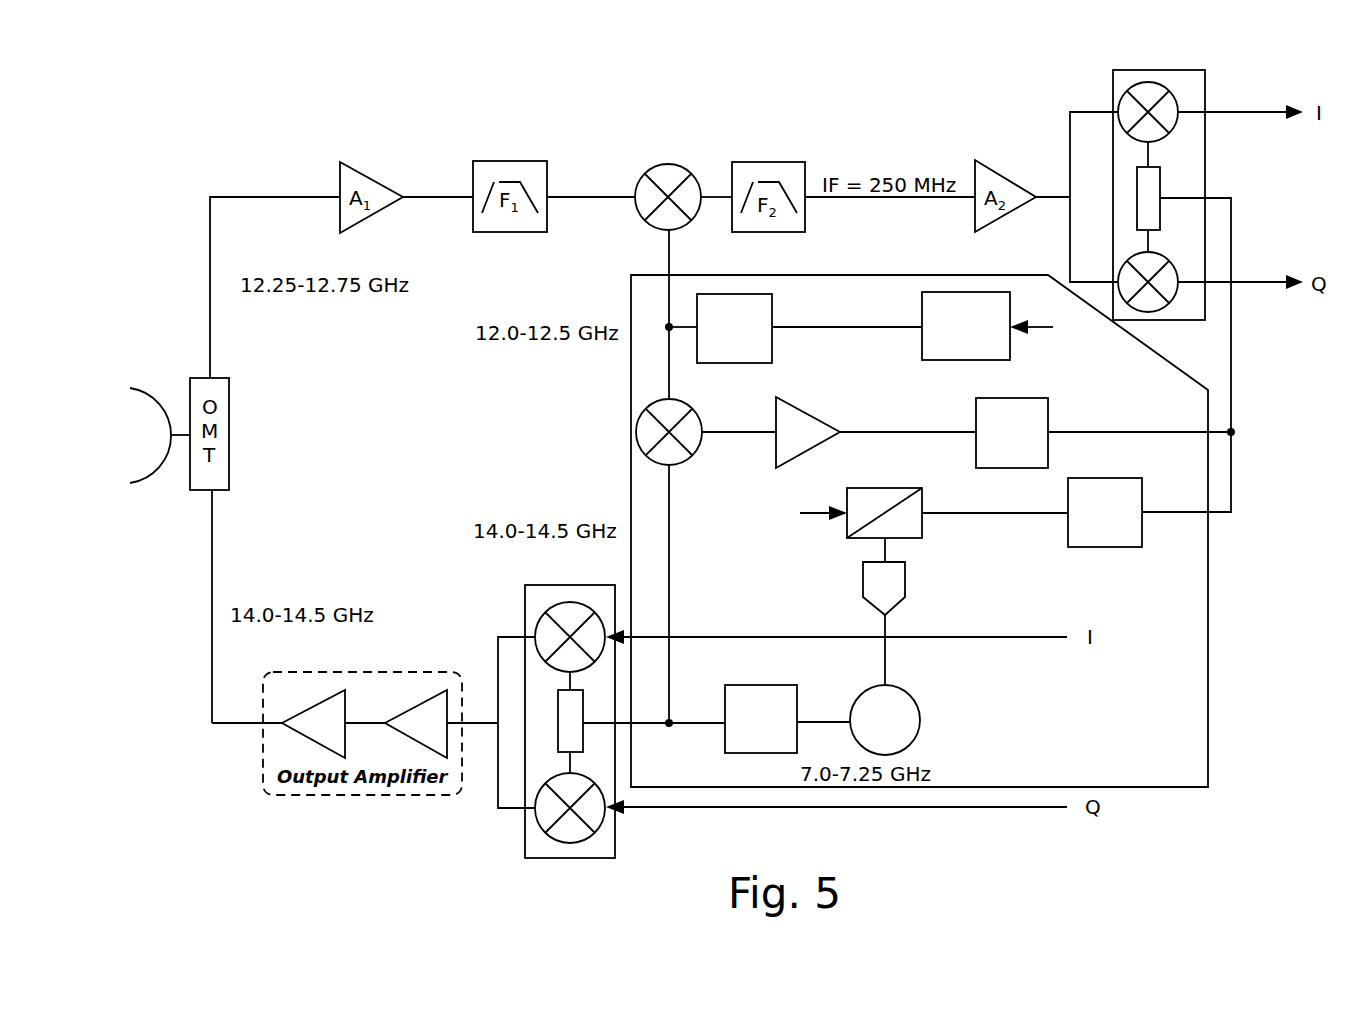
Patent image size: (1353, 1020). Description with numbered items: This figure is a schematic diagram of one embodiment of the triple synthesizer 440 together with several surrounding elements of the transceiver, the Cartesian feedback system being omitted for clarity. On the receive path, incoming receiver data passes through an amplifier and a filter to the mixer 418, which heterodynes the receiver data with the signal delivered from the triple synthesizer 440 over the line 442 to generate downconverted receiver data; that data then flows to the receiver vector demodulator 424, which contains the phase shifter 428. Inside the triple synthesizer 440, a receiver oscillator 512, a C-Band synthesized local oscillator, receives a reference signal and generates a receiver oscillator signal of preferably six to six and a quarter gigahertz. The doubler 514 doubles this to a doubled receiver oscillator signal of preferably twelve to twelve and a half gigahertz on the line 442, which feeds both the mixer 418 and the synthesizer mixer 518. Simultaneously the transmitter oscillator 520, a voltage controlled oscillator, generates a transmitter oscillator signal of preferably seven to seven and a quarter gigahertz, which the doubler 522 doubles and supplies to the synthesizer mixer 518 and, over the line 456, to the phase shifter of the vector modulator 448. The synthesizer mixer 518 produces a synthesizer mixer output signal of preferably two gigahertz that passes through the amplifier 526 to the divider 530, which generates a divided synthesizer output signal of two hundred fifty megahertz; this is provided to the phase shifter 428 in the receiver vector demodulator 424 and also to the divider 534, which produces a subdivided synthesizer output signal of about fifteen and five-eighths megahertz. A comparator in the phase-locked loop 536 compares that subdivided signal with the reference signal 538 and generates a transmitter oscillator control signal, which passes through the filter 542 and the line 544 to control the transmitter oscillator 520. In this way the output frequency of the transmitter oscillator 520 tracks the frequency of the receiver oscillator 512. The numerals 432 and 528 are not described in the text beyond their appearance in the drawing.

The mixer 418 is at (668, 164).
The receiver vector demodulator 424 is at (1202, 195).
The phase shifter 428 is at (1160, 173).
The 250 MHz reference line 432 is at (1232, 452).
The triple synthesizer 440 is at (1208, 645).
The line 442 is at (670, 250).
The vector modulator 448 is at (615, 838).
The line 456 is at (670, 578).
The receiver oscillator 512 is at (1010, 352).
The doubler 514 is at (772, 348).
The synthesizer mixer 518 is at (686, 403).
The transmitter oscillator 520 is at (918, 708).
The doubler 522 is at (745, 685).
The amplifier 526 is at (776, 450).
The 2.0 GHz signal line 528 is at (905, 435).
The divider 530 is at (1024, 398).
The divider 534 is at (1100, 547).
The phase-locked loop 536 is at (922, 528).
The reference signal 538 is at (808, 515).
The filter 542 is at (905, 585).
The line 544 is at (886, 652).